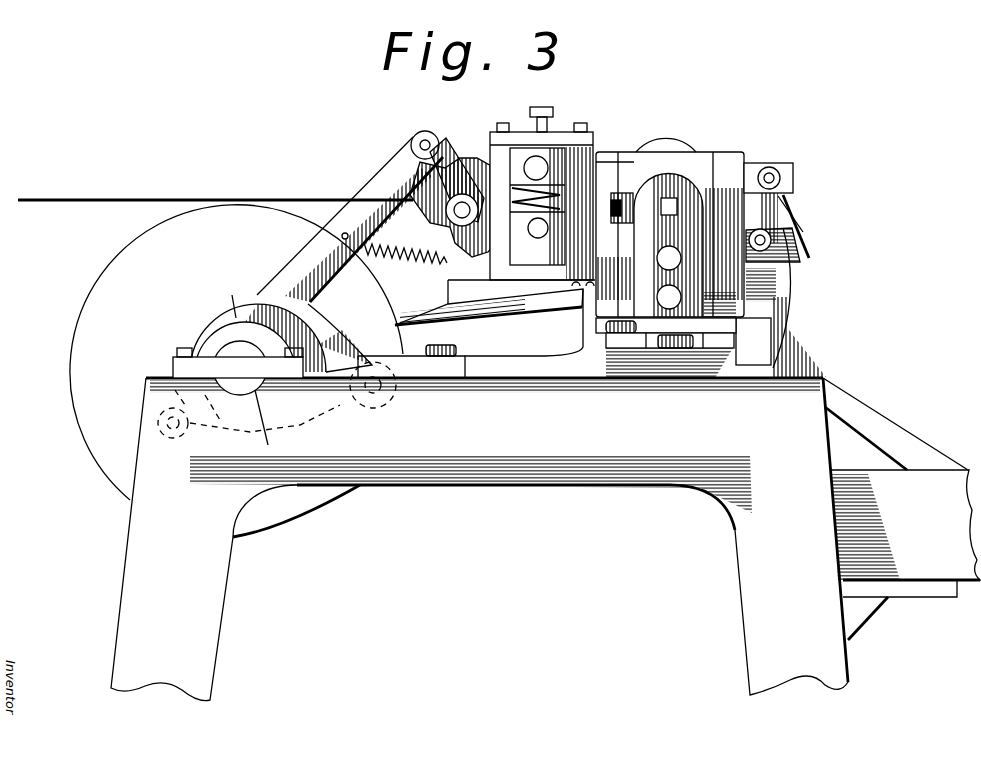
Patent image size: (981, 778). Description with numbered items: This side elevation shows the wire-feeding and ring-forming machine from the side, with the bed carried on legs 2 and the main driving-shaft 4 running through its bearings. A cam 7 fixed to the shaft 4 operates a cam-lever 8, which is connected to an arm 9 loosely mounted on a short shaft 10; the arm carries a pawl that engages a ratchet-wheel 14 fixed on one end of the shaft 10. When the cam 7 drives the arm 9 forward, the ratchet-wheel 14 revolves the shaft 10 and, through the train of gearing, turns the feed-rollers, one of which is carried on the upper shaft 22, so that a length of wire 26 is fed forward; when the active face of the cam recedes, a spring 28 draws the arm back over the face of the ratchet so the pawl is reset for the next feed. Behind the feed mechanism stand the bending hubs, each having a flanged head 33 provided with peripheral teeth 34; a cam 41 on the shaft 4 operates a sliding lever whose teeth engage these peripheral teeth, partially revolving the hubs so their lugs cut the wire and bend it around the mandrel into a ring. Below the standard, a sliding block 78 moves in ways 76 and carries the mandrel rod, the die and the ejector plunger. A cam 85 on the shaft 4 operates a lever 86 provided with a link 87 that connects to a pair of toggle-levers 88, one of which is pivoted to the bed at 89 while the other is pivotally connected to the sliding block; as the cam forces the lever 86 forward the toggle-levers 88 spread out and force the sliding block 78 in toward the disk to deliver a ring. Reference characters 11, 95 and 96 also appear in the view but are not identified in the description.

The legs 2 is at (545, 539).
The main driving-shaft 4 is at (277, 413).
The cam 7 is at (148, 377).
The cam-lever 8 is at (395, 176).
The arm 9 is at (442, 153).
The short shaft 10 is at (463, 206).
The pin 11 is at (536, 236).
The ratchet-wheel 14 is at (461, 207).
The shaft 22 is at (539, 165).
The wire 26 is at (312, 199).
The spring 28 is at (418, 268).
The flanged head 33 is at (680, 148).
The peripheral teeth 34 is at (642, 146).
The cam 41 is at (236, 352).
The ways 76 is at (763, 328).
The sliding block 78 is at (713, 328).
The cam 85 is at (281, 333).
The lever 86 is at (432, 363).
The link 87 is at (513, 363).
The toggle-levers 88 is at (625, 336).
The pivot 89 is at (667, 345).
The bracket pin 95 is at (771, 175).
The lever 96 is at (800, 216).